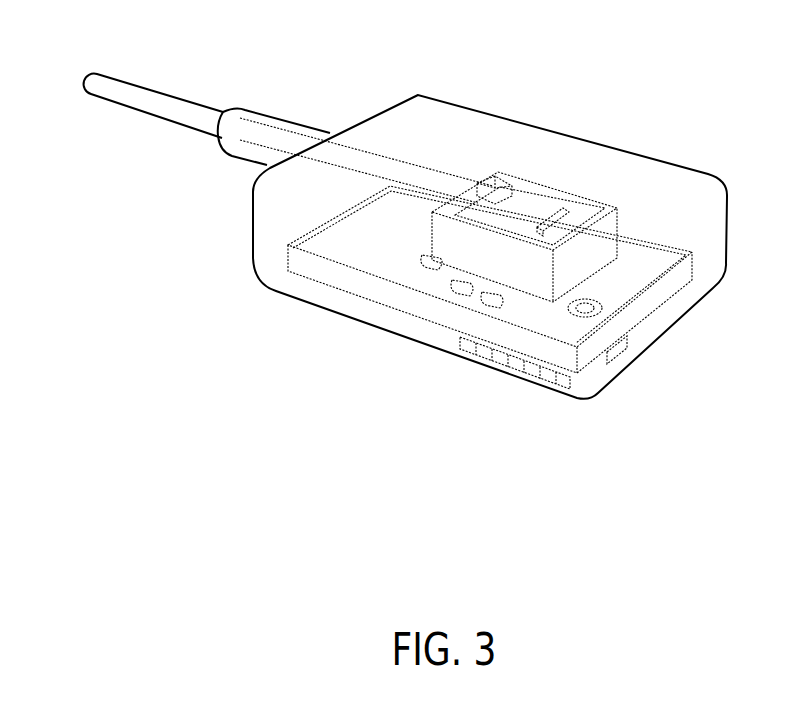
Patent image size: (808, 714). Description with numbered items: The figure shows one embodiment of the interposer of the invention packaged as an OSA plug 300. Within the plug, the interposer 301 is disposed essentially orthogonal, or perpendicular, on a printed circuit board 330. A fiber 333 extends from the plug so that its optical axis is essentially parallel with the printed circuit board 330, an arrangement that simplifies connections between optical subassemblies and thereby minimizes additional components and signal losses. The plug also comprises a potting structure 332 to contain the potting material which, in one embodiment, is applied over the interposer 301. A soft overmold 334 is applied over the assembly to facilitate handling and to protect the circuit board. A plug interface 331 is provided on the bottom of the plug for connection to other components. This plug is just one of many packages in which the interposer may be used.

The OSA plug 300 is at (619, 104).
The interposer 301 is at (506, 202).
The printed circuit board 330 is at (570, 328).
The plug interface 331 is at (507, 357).
The potting structure 332 is at (447, 260).
The fiber 333 is at (187, 108).
The soft overmold 334 is at (715, 222).